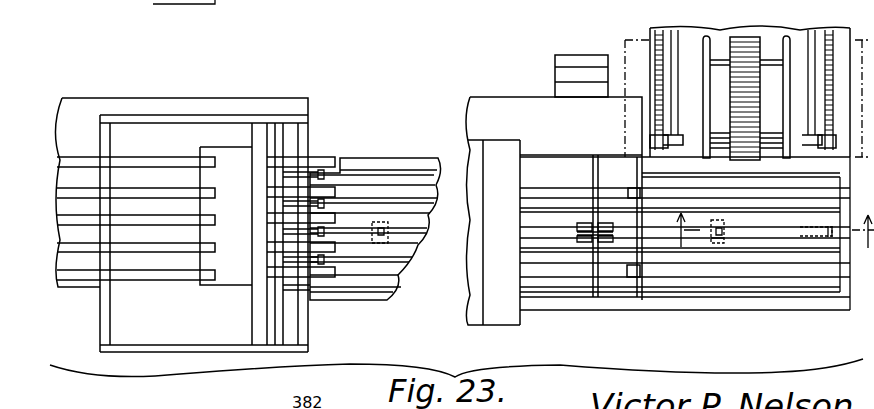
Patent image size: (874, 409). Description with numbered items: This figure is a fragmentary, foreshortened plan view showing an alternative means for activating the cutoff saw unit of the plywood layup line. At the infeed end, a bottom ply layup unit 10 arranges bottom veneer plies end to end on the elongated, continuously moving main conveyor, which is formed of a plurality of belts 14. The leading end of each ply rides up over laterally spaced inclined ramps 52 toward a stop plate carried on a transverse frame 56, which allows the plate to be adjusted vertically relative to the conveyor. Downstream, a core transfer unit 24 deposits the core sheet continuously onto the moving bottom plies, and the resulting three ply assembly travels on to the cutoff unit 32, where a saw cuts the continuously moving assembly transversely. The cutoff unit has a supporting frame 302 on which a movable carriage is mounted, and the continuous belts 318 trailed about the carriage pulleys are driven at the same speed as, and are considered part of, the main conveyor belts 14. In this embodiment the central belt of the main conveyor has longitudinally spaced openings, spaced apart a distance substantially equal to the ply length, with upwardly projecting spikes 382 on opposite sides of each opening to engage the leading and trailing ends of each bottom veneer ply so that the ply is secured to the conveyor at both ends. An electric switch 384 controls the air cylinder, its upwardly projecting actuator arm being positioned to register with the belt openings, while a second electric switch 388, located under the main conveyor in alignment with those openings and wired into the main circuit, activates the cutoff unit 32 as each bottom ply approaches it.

The bottom ply layup unit 10 is at (593, 38).
The main conveyor belts 14 is at (803, 208).
The core transfer unit 24 is at (677, 236).
The cutoff unit 32 is at (330, 118).
The inclined ramps 52 is at (668, 272).
The transverse frame 56 is at (595, 168).
The supporting frame 302 is at (191, 115).
The continuous belts 318 is at (173, 172).
The upwardly projecting spikes 382 is at (832, 232).
The electric switch 384 is at (725, 243).
The electric switch 388 is at (385, 250).